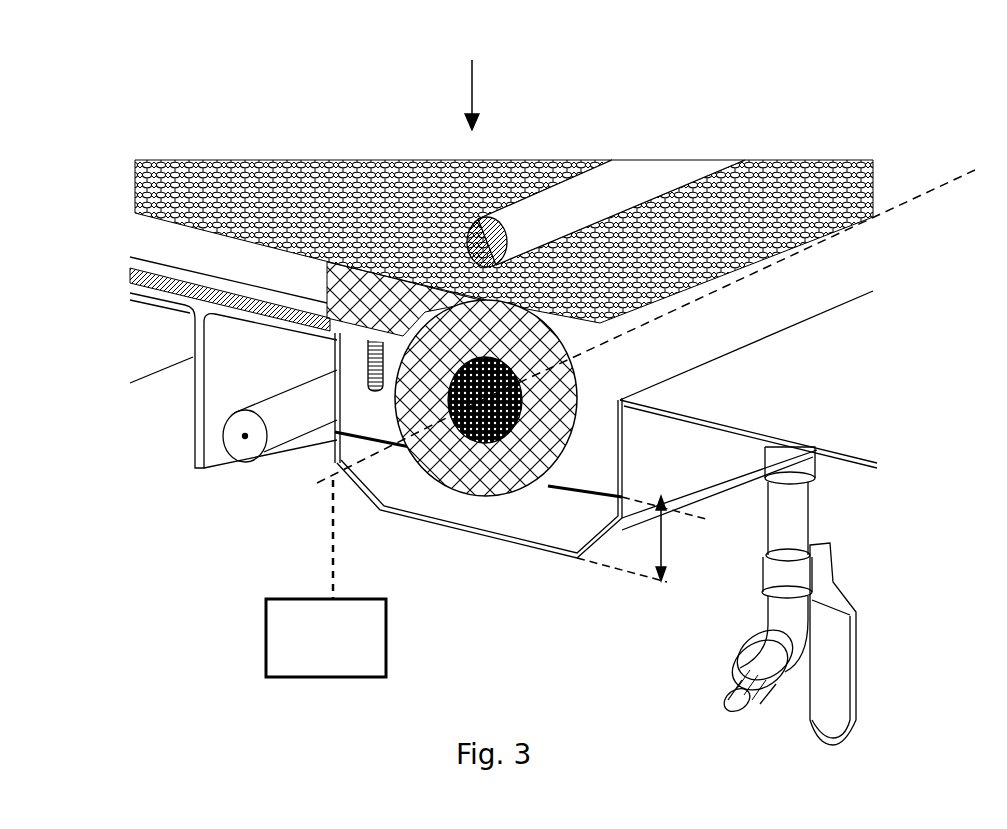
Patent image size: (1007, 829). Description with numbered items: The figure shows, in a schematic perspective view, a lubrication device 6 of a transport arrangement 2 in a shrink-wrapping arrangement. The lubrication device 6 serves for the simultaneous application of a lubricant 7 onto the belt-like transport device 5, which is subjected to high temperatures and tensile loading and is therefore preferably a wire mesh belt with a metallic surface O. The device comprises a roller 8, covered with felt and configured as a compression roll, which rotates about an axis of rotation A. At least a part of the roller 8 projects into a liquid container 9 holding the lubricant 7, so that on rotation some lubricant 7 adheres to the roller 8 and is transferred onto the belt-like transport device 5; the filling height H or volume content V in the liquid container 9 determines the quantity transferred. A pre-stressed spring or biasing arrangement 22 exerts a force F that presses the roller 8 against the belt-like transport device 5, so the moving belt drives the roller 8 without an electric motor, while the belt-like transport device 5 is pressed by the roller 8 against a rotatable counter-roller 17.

The transport arrangement 2 is at (341, 106).
The belt-like transport device 5 is at (230, 183).
The counter-roller 17 is at (528, 218).
The lubrication device 6 is at (300, 540).
The lubricant 7 is at (520, 530).
The roller 8 is at (473, 473).
The liquid container 9 is at (410, 522).
The biasing arrangement 22 is at (326, 638).